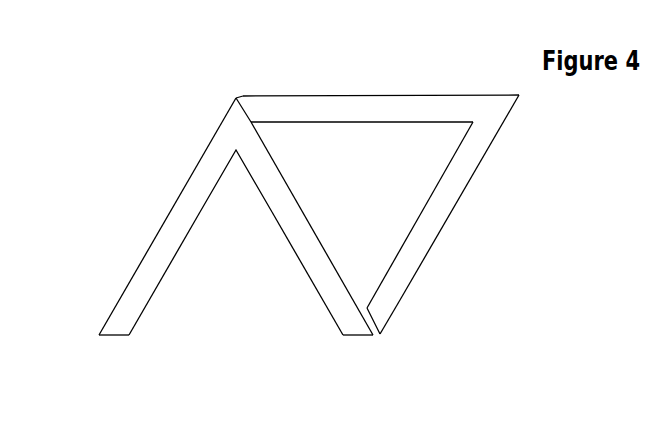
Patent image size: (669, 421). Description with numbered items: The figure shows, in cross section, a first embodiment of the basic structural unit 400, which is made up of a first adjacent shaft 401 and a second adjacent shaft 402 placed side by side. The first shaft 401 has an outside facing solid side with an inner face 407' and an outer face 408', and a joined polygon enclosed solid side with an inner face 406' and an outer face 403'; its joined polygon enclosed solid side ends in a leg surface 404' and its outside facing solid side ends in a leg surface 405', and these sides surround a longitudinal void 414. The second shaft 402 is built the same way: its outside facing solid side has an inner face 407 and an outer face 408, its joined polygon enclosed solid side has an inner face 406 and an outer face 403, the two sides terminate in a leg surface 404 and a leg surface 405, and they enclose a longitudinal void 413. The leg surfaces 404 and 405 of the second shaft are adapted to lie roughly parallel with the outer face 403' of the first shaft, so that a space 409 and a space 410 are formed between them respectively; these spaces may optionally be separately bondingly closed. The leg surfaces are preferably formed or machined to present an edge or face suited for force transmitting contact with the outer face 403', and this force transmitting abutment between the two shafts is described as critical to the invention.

The basic structural unit 400 is at (495, 186).
The first adjacent shaft 401 is at (185, 157).
The second adjacent shaft 402 is at (448, 75).
The outer face of a joined polygon enclosed solid side 403 is at (471, 197).
The outer face of a joined polygon enclosed solid side 403' is at (314, 228).
The leg surface of a joined polygon enclosed solid side 404 is at (437, 327).
The leg surface of a joined polygon enclosed solid side 404' is at (336, 372).
The leg surface of an outside facing solid side 405 is at (270, 83).
The leg surface of an outside facing solid side 405' is at (103, 370).
The inner face of a joined polygon enclosed solid side 406 is at (426, 168).
The inner face of a joined polygon enclosed solid side 406' is at (294, 273).
The inner face of an outside facing solid side 407 is at (362, 146).
The inner face of an outside facing solid side 407' is at (176, 273).
The outer face of an outside facing solid side 408 is at (381, 71).
The outer face of an outside facing solid side 408' is at (156, 216).
The space 409 is at (379, 339).
The space 410 is at (239, 97).
The longitudinal void 413 is at (373, 247).
The longitudinal void 414 is at (213, 245).